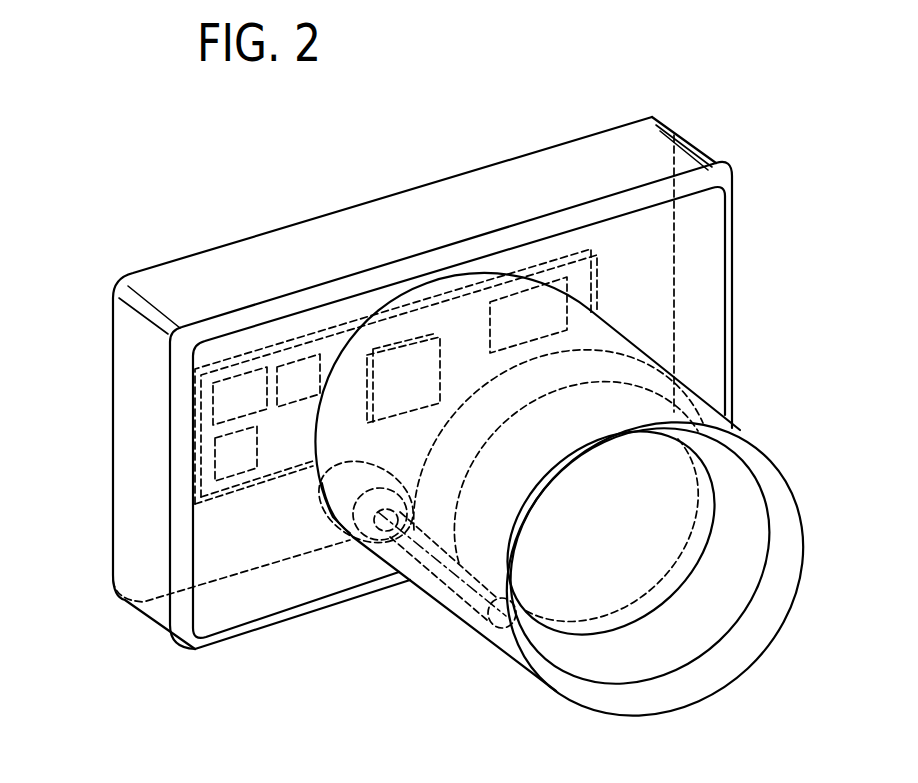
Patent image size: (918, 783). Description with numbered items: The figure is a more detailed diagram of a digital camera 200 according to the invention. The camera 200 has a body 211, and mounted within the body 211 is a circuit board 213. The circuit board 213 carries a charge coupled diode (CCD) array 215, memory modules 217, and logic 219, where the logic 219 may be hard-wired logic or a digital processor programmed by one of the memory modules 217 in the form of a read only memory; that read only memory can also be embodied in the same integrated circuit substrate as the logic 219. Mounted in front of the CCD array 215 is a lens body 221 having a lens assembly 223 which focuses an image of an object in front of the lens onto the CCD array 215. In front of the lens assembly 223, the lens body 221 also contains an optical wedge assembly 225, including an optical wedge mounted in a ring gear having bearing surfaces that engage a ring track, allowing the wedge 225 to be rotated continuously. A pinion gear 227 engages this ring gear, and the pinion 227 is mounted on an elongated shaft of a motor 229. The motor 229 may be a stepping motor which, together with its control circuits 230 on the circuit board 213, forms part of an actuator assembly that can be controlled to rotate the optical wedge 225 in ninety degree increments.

The digital camera 200 is at (140, 177).
The body 211 is at (621, 130).
The circuit board 213 is at (452, 318).
The charge coupled diode (CCD) array 215 is at (400, 378).
The memory modules 217 is at (236, 402).
The logic 219 is at (515, 318).
The lens body 221 is at (713, 688).
The lens assembly 223 is at (590, 366).
The optical wedge assembly 225 is at (657, 497).
The pinion gear 227 is at (487, 638).
The motor 229 is at (353, 535).
The control circuits 230 is at (196, 479).